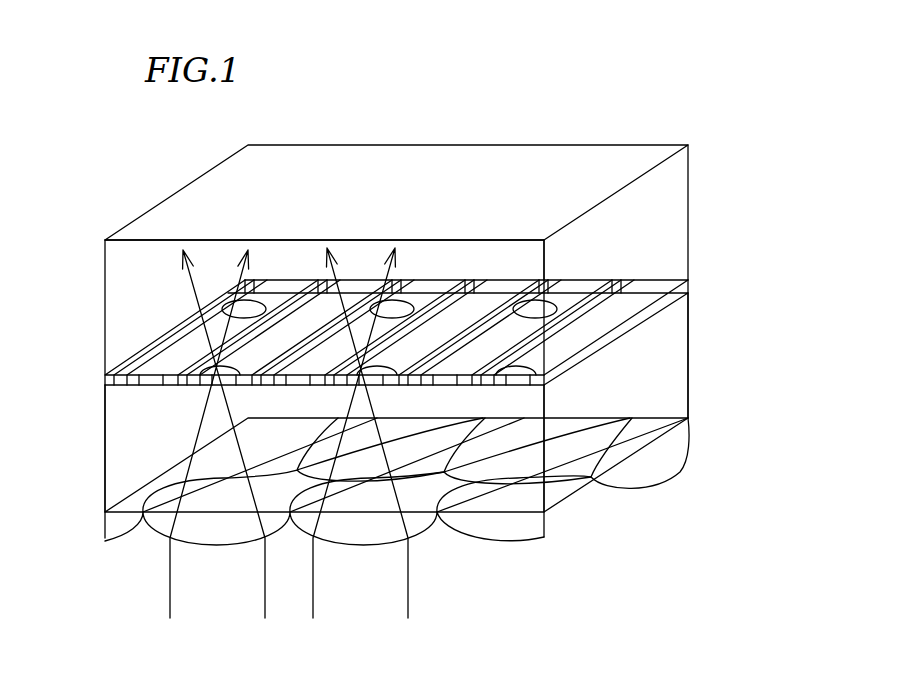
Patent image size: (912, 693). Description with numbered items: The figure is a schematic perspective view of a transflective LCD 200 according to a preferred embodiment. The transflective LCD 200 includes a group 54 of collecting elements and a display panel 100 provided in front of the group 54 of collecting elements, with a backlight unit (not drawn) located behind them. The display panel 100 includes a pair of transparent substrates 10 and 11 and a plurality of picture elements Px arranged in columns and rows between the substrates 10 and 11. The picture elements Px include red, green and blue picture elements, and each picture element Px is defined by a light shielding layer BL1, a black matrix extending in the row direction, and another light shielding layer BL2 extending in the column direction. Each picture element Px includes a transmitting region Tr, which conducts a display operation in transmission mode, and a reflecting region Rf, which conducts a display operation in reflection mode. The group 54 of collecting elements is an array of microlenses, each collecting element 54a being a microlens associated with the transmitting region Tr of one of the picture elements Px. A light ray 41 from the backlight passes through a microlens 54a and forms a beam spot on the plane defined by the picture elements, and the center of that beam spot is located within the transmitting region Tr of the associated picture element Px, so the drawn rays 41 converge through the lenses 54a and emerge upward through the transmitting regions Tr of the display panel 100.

The transflective LCD 200 is at (687, 66).
The display panel 100 is at (795, 145).
The transparent substrate 11 is at (680, 224).
The transparent substrate 10 is at (647, 388).
The light shielding layer BL1 is at (690, 296).
The light shielding layer BL2 is at (107, 362).
The picture element Px is at (578, 335).
The transmitting region Tr is at (541, 306).
The reflecting region Rf is at (618, 311).
The group of collecting elements 54 is at (764, 479).
The collecting element 54a is at (667, 458).
The light ray 41 is at (410, 588).